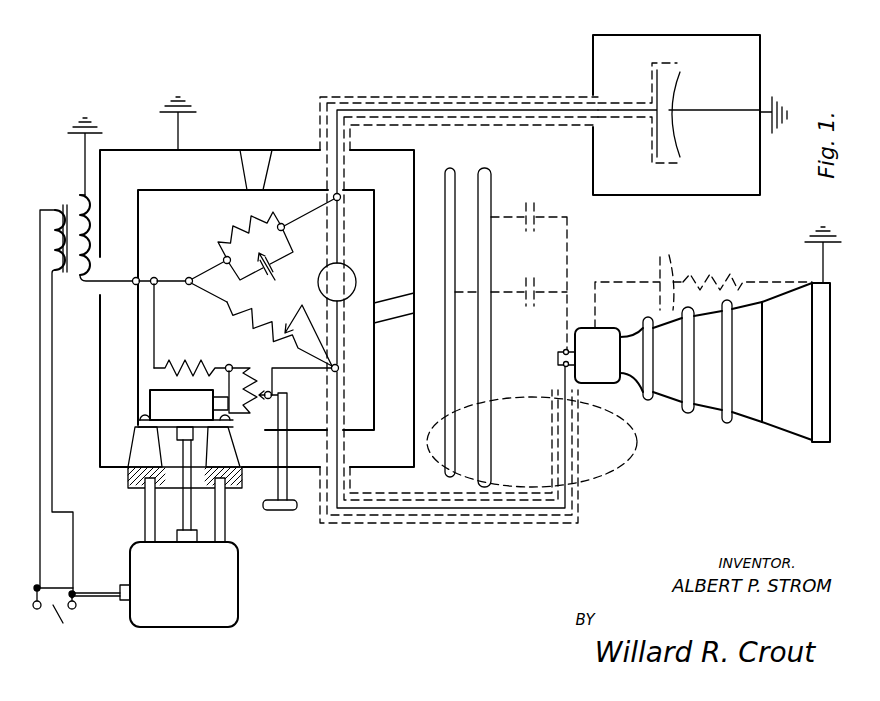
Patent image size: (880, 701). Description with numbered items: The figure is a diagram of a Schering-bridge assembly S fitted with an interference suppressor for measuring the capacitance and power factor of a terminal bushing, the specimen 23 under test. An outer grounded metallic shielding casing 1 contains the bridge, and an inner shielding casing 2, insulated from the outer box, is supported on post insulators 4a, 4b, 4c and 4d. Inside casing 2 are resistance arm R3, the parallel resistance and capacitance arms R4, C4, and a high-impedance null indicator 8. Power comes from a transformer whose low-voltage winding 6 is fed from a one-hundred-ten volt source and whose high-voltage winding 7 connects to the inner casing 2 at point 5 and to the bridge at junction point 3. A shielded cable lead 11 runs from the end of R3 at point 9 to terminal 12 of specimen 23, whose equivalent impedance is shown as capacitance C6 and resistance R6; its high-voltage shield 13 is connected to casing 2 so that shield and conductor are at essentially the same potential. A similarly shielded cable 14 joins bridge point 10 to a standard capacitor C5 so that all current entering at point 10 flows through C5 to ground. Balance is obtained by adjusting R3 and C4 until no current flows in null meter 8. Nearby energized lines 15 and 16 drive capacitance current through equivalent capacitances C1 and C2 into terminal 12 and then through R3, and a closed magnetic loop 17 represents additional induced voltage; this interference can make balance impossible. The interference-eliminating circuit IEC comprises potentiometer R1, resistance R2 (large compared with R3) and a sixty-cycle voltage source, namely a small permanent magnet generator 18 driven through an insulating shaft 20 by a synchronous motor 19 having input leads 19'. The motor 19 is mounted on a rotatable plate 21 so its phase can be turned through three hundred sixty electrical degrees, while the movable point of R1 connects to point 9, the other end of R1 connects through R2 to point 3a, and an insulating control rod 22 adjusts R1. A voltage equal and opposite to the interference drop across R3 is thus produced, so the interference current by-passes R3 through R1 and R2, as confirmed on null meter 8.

The outer grounded metallic shielding casing 1 is at (133, 145).
The inner shielding casing 2 is at (169, 188).
The junction point 3 is at (188, 277).
The junction point 3a is at (153, 277).
The insulating post insulator 4a is at (146, 445).
The insulating post insulator 4b is at (226, 451).
The insulating post insulator 4c is at (396, 306).
The insulating post insulator 4d is at (264, 160).
The connection point 5 is at (134, 278).
The low-voltage winding 6 is at (45, 208).
The high-voltage winding 7 is at (78, 192).
The null indicator 8 is at (342, 296).
The connection point 9 is at (340, 372).
The connection point 10 is at (341, 202).
The shielded cable lead 11 is at (418, 512).
The terminal 12 is at (558, 360).
The high-voltage shield 13 is at (356, 97).
The shielded cable 14 is at (388, 108).
The energized line 15 is at (448, 228).
The energized line 16 is at (484, 200).
The closed magnetic loop 17 is at (528, 394).
The voltage source 18 is at (158, 410).
The synchronous motor 19 is at (156, 584).
The input leads 19' is at (68, 618).
The insulating shaft 20 is at (183, 495).
The rotatable plate 21 is at (145, 495).
The insulating control rod 22 is at (287, 470).
The specimen under test 23 is at (706, 395).
The potentiometer R1 is at (251, 380).
The resistance R2 is at (201, 361).
The resistance arm R3 is at (278, 328).
The resistance arm R4 is at (245, 226).
The resistance R6 is at (716, 270).
The equivalent capacitance C1 is at (535, 290).
The equivalent capacitance C2 is at (535, 207).
The parallel capacitance arm C4 is at (259, 270).
The standard capacitor C5 is at (671, 127).
The equivalent capacitance C6 is at (671, 251).
The Schering-bridge assembly S is at (208, 204).
The interference-eliminating circuit IEC is at (228, 492).